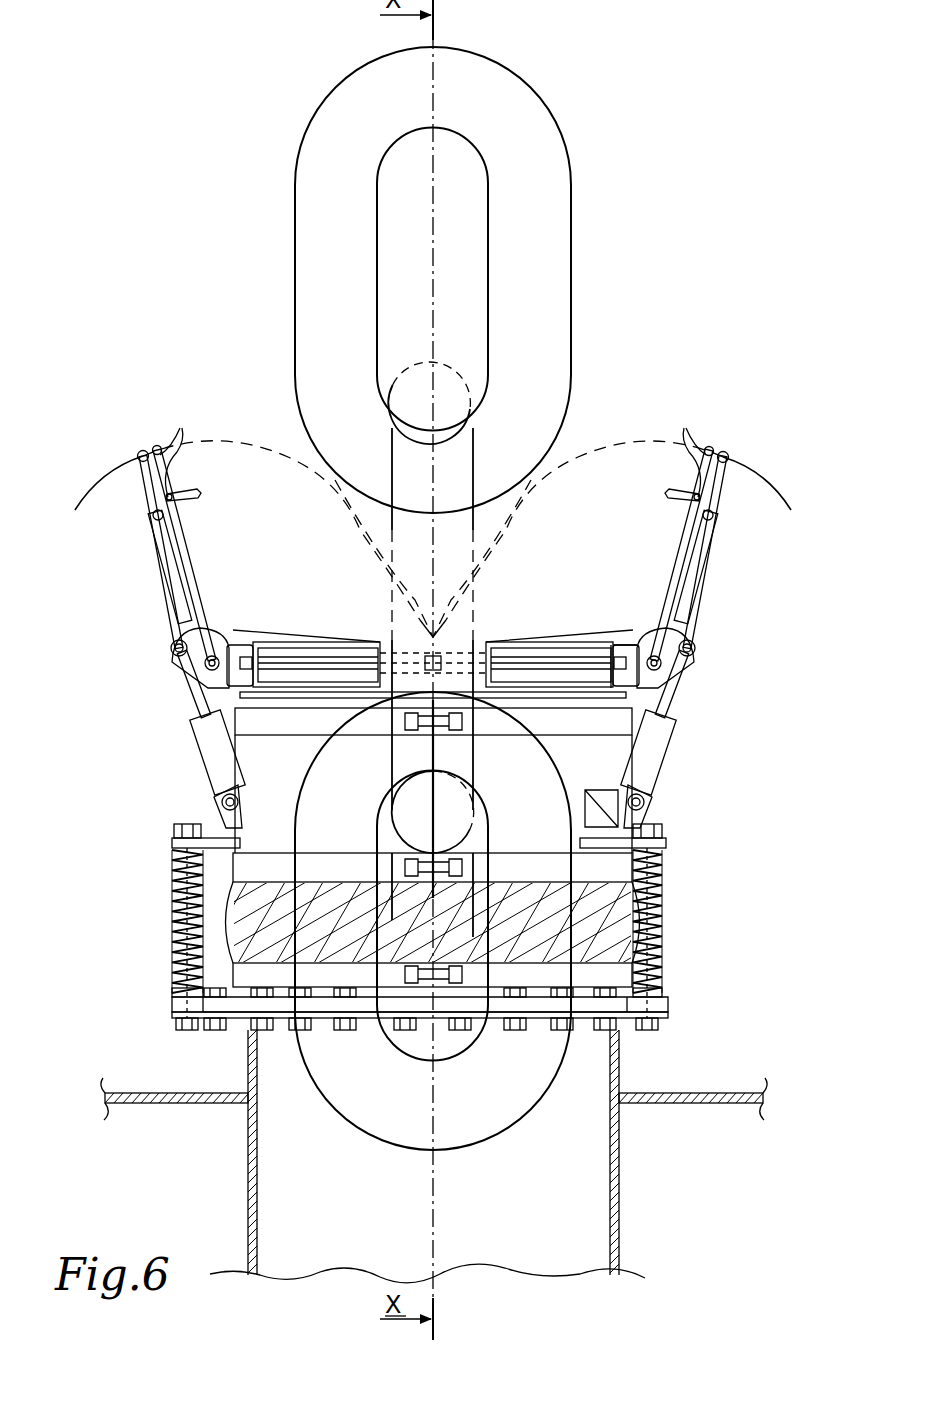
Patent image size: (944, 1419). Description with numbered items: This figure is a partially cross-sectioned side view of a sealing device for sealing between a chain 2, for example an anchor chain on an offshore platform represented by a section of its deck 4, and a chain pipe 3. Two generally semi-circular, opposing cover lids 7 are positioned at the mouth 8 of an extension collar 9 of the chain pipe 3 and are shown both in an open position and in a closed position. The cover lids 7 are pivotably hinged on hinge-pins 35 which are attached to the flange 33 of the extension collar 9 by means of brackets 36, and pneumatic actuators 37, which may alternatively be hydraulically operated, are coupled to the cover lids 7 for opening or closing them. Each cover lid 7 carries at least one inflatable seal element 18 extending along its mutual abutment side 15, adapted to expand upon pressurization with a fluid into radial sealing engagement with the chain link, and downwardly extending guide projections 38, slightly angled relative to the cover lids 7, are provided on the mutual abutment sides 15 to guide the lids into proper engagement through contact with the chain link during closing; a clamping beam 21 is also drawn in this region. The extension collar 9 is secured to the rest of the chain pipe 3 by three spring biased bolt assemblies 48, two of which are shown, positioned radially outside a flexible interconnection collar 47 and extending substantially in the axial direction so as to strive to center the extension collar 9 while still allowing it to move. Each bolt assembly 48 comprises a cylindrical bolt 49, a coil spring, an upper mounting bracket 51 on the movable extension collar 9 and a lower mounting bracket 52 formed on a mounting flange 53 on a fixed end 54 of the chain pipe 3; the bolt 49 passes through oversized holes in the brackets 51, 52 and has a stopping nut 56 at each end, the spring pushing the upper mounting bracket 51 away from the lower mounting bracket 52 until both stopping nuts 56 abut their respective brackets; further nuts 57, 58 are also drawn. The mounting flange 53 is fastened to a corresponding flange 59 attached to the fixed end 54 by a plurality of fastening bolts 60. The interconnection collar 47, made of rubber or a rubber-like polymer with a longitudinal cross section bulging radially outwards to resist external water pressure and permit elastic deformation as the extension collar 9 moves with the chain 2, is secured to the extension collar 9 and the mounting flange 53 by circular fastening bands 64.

The chain 2 is at (568, 92).
The chain pipe 3 is at (622, 1066).
The deck 4 is at (690, 1107).
The cover lid 7 is at (133, 493).
The mouth 8 is at (137, 567).
The extension collar 9 is at (265, 760).
The mutual abutment side 15 is at (143, 451).
The inflatable seal element 18 is at (158, 446).
The clamping beam 21 is at (243, 642).
The flange 33 is at (612, 645).
The hinge-pin 35 is at (205, 666).
The bracket 36 is at (171, 648).
The pneumatic actuator 37 is at (215, 770).
The guide projection 38 is at (180, 498).
The flexible interconnection collar 47 is at (610, 914).
The spring biased bolt assembly 48 is at (170, 925).
The cylindrical bolt 49 is at (172, 962).
The upper mounting bracket 51 is at (172, 843).
The lower mounting bracket 52 is at (172, 1005).
The mounting flange 53 is at (672, 1002).
The fixed end 54 is at (216, 1047).
The stopping nut 56 is at (174, 831).
The tie rod 57 is at (179, 858).
The nut 58 is at (172, 992).
The flange 59 is at (672, 1015).
The fastening bolt 60 is at (342, 1050).
The circular fastening band 64 is at (664, 833).